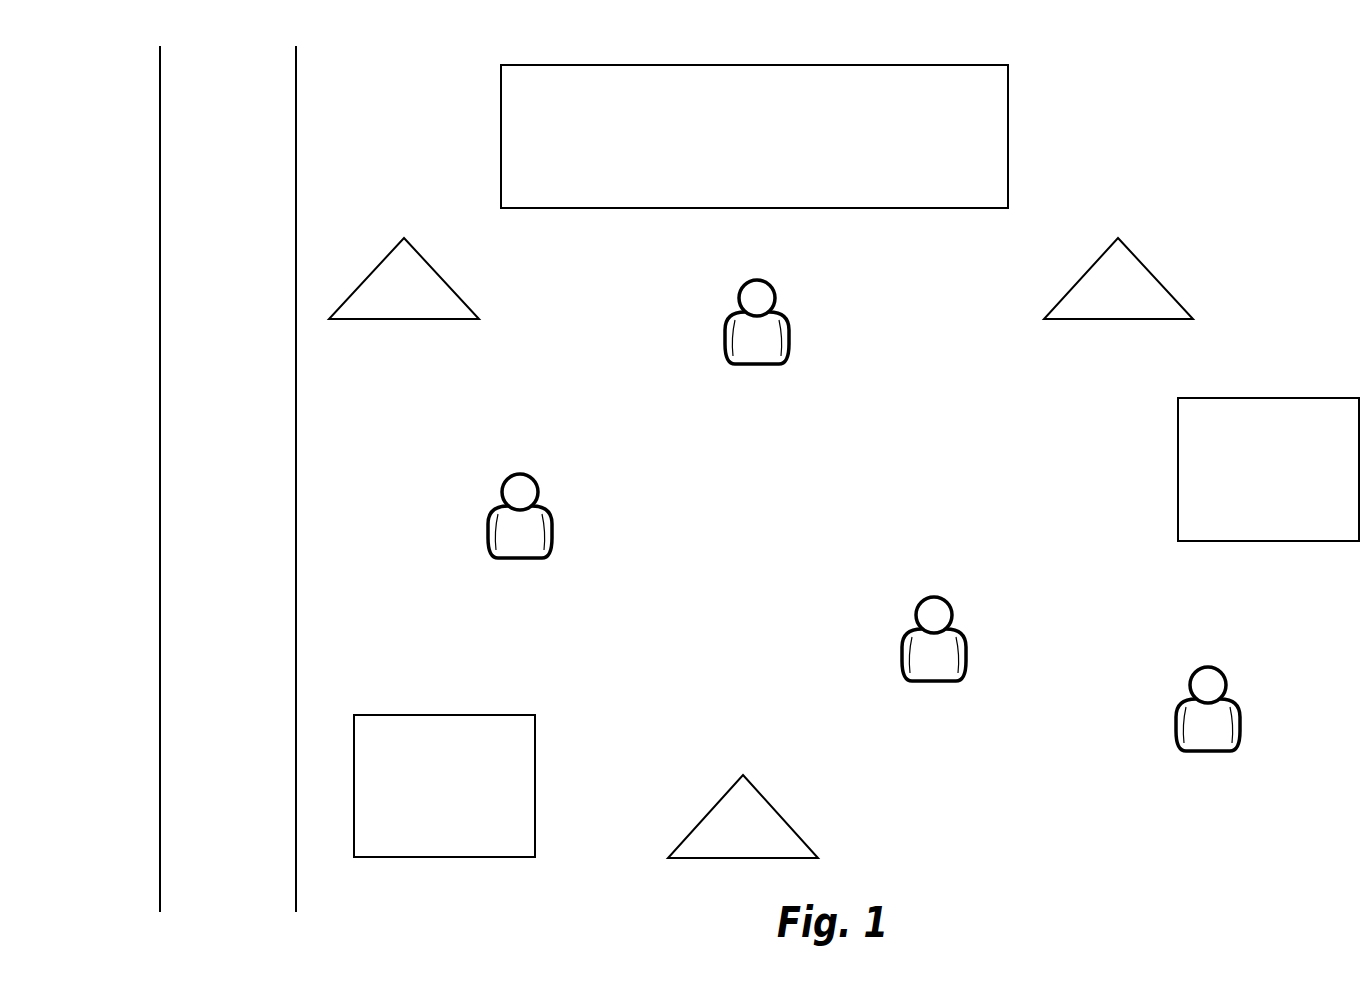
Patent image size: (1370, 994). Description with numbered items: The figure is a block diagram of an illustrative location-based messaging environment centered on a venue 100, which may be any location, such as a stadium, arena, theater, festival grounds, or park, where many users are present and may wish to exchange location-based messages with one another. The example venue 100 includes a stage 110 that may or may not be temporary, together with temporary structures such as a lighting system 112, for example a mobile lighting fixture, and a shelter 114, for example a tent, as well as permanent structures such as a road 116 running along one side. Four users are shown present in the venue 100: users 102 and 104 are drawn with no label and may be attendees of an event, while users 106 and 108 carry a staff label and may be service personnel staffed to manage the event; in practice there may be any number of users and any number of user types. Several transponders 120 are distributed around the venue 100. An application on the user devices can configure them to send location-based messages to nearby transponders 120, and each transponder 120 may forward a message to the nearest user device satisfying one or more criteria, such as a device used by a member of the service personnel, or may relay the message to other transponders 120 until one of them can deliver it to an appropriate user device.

The venue 100 is at (1237, 106).
The user 102 is at (516, 474).
The user 104 is at (931, 597).
The user 106 is at (765, 279).
The user 108 is at (1215, 667).
The stage 110 is at (754, 136).
The lighting system 112 is at (444, 786).
The shelter 114 is at (1268, 469).
The road 116 is at (228, 479).
The transponder 120 is at (761, 548).